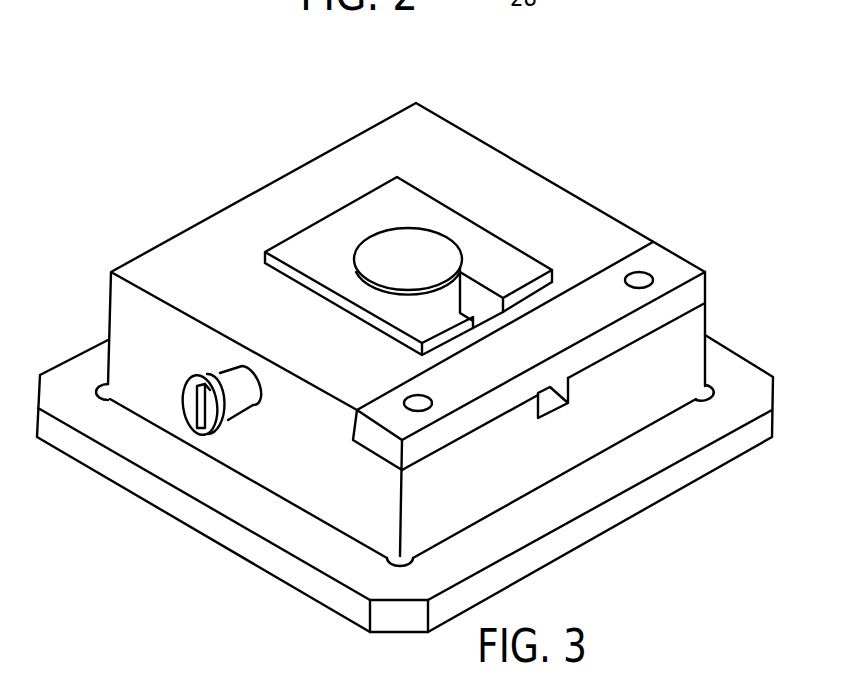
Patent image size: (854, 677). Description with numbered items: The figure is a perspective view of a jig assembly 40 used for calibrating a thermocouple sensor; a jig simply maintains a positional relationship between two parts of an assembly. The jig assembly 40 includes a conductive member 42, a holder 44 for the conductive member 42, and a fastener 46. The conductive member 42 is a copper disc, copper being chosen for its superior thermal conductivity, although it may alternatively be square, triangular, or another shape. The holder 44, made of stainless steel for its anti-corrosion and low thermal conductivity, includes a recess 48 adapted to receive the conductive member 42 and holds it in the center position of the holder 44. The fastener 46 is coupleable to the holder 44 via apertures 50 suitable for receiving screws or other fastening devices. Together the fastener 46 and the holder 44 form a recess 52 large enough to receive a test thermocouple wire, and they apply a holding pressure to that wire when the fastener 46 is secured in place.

The jig assembly 40 is at (618, 95).
The conductive member 42 is at (424, 273).
The holder 44 is at (482, 160).
The fastener 46 is at (673, 268).
The recess 48 is at (458, 240).
The apertures 50 is at (640, 270).
The recess 52 is at (550, 403).